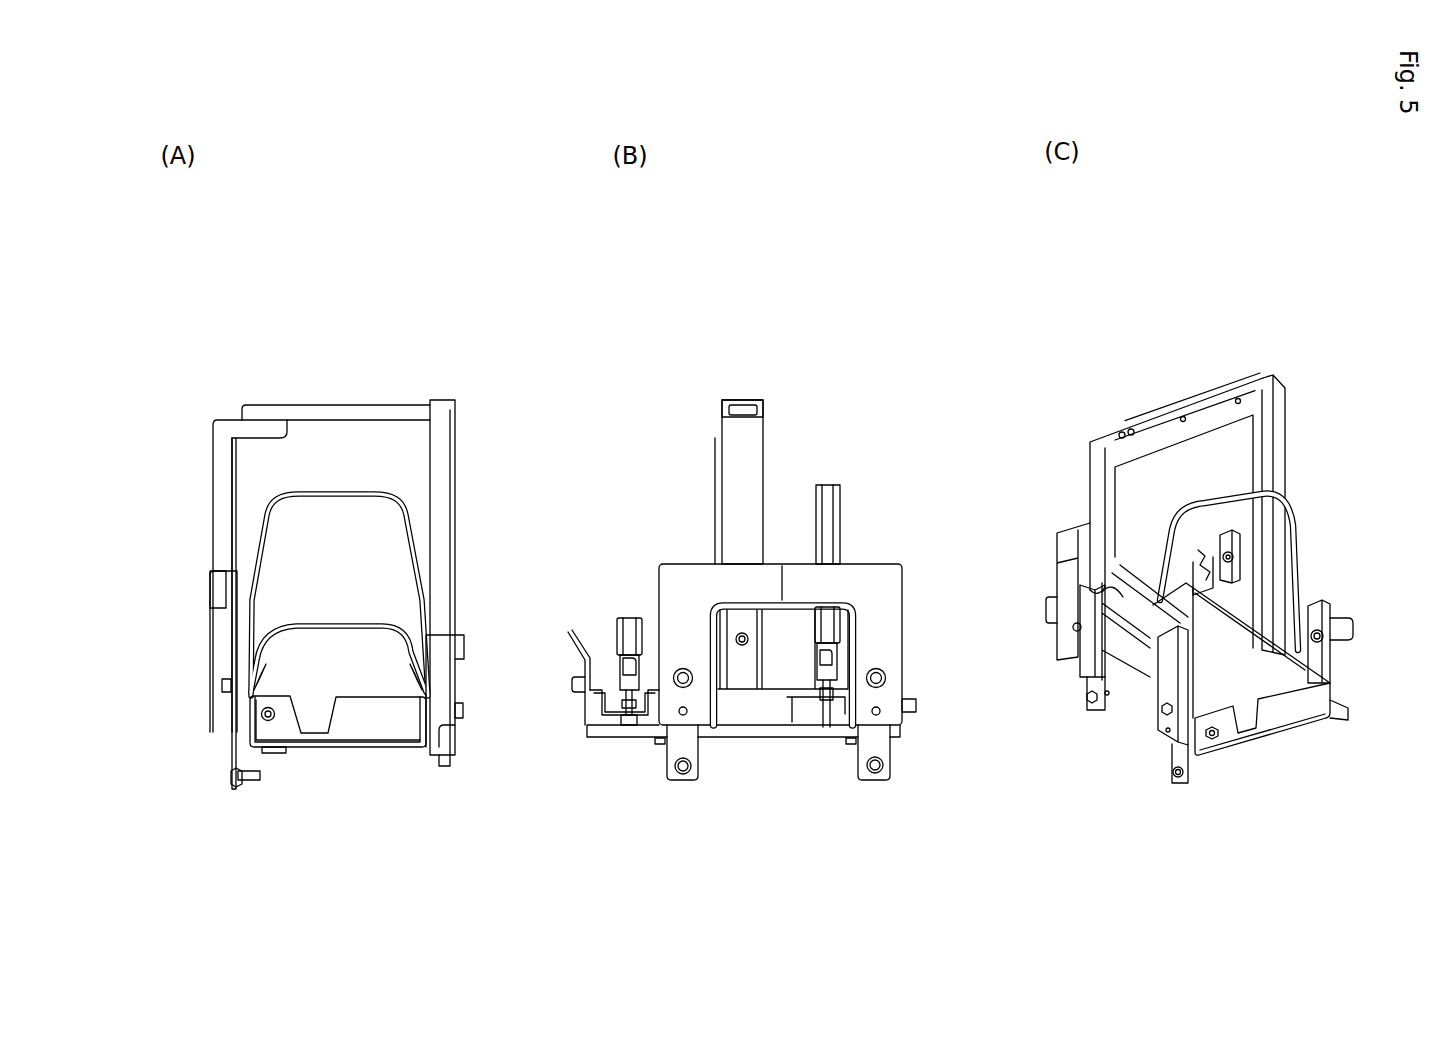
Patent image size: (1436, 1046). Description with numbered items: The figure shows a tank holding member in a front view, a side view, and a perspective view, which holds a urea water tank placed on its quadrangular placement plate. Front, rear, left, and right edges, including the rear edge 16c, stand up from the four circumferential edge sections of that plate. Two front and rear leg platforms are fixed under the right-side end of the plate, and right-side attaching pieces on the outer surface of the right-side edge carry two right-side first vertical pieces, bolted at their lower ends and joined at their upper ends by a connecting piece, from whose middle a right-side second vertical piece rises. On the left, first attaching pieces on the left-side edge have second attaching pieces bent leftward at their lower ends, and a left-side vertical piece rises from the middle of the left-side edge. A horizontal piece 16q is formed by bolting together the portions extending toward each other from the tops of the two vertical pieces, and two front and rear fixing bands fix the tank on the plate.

The rear edge 16c is at (1148, 575).
The horizontal piece 16q is at (1204, 411).